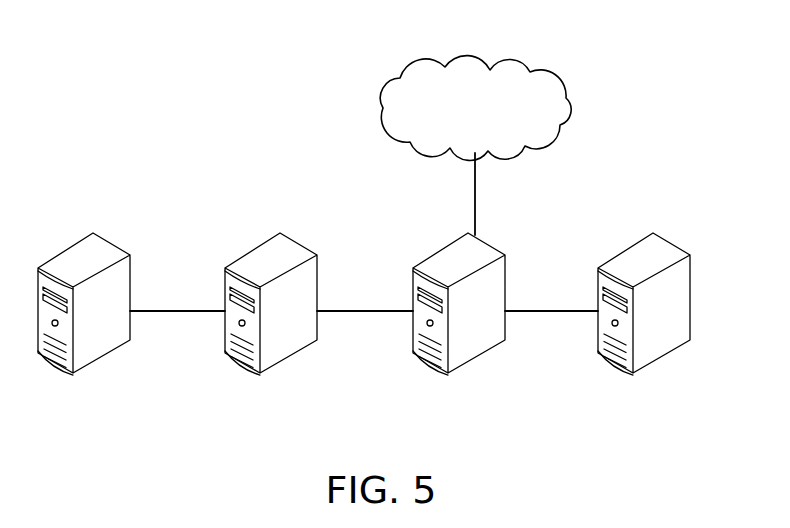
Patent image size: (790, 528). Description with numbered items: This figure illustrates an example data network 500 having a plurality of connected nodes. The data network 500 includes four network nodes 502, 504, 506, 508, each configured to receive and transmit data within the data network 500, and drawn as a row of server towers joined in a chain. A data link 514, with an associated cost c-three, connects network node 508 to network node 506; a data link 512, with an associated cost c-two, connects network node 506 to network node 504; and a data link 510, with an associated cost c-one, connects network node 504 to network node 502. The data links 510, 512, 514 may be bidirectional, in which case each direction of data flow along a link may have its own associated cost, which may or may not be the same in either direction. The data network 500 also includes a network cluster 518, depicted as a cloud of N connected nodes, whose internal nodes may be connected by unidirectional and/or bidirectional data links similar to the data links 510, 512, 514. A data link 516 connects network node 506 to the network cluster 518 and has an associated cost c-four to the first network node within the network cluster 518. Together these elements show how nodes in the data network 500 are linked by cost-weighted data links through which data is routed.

The data network 500 is at (152, 83).
The network node 502 is at (101, 342).
The network node 504 is at (288, 342).
The network node 506 is at (476, 342).
The network node 508 is at (661, 342).
The data link 510 is at (180, 311).
The data link 512 is at (362, 311).
The data link 514 is at (550, 311).
The data link 516 is at (475, 178).
The network cluster 518 is at (513, 80).